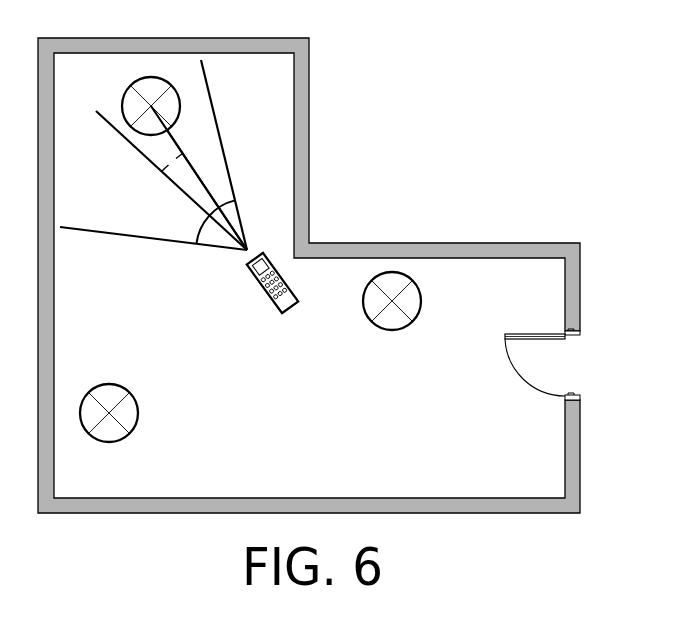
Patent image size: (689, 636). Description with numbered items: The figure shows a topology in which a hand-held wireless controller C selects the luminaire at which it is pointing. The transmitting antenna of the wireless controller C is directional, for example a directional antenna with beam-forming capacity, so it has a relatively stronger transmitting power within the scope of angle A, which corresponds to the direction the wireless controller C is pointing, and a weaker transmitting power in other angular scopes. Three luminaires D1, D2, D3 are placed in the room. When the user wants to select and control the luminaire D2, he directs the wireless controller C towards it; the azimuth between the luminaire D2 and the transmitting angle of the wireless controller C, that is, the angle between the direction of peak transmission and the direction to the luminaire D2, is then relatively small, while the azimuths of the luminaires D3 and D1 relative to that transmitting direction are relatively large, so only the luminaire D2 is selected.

The wireless controller C is at (272, 298).
The luminaire D1 is at (392, 319).
The luminaire D2 is at (131, 100).
The luminaire D3 is at (109, 431).
The angle A is at (199, 221).